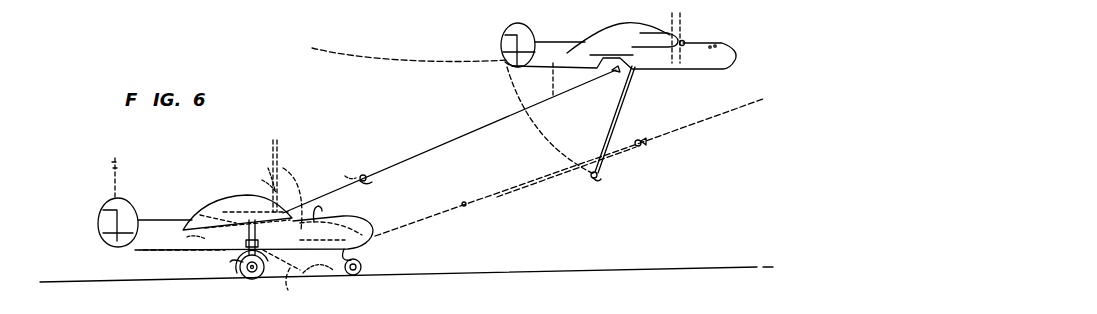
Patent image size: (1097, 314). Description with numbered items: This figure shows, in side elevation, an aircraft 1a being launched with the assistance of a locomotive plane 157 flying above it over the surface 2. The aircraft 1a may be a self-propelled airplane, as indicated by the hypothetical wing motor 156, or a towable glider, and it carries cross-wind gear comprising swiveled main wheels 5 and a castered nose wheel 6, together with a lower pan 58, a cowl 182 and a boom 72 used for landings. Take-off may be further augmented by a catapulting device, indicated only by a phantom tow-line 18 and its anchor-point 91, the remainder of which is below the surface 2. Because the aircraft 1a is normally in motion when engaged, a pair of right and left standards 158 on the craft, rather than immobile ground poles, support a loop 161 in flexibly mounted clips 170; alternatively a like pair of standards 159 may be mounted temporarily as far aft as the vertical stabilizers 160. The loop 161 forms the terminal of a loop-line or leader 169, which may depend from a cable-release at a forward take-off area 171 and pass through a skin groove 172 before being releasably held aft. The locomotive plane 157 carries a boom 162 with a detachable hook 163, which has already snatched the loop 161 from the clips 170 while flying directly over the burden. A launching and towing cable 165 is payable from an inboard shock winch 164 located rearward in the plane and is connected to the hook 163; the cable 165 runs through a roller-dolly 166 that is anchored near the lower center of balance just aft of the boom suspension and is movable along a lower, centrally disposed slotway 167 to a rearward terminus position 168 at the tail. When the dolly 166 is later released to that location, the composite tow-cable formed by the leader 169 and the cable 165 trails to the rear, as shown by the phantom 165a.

The surface 2 is at (644, 271).
The aircraft 1a is at (389, 242).
The vertical stabilizers 160 is at (126, 198).
The standards 159 is at (110, 181).
The cowl 182 is at (208, 204).
The boom 72 is at (187, 240).
The lower pan 58 is at (262, 273).
The leader 169 is at (258, 230).
The main wheels 5 is at (243, 262).
The nose wheel 6 is at (362, 266).
The tow-line 18 is at (289, 290).
The anchor-point 91 is at (338, 276).
The skin groove 172 is at (331, 235).
The take-off area 171 is at (392, 205).
The wing motor 156 is at (290, 175).
The clips 170 is at (277, 143).
The standards 158 is at (268, 168).
The loop 161 is at (347, 178).
The launching and towing cable 165 is at (425, 150).
The hook 163 is at (596, 182).
The boom 162 is at (620, 100).
The composite tow-cable 165a is at (383, 58).
The locomotive plane 157 is at (768, 30).
The shock winch 164 is at (522, 63).
The position 168 is at (508, 66).
The roller-dolly 166 is at (626, 38).
The slotway 167 is at (555, 93).